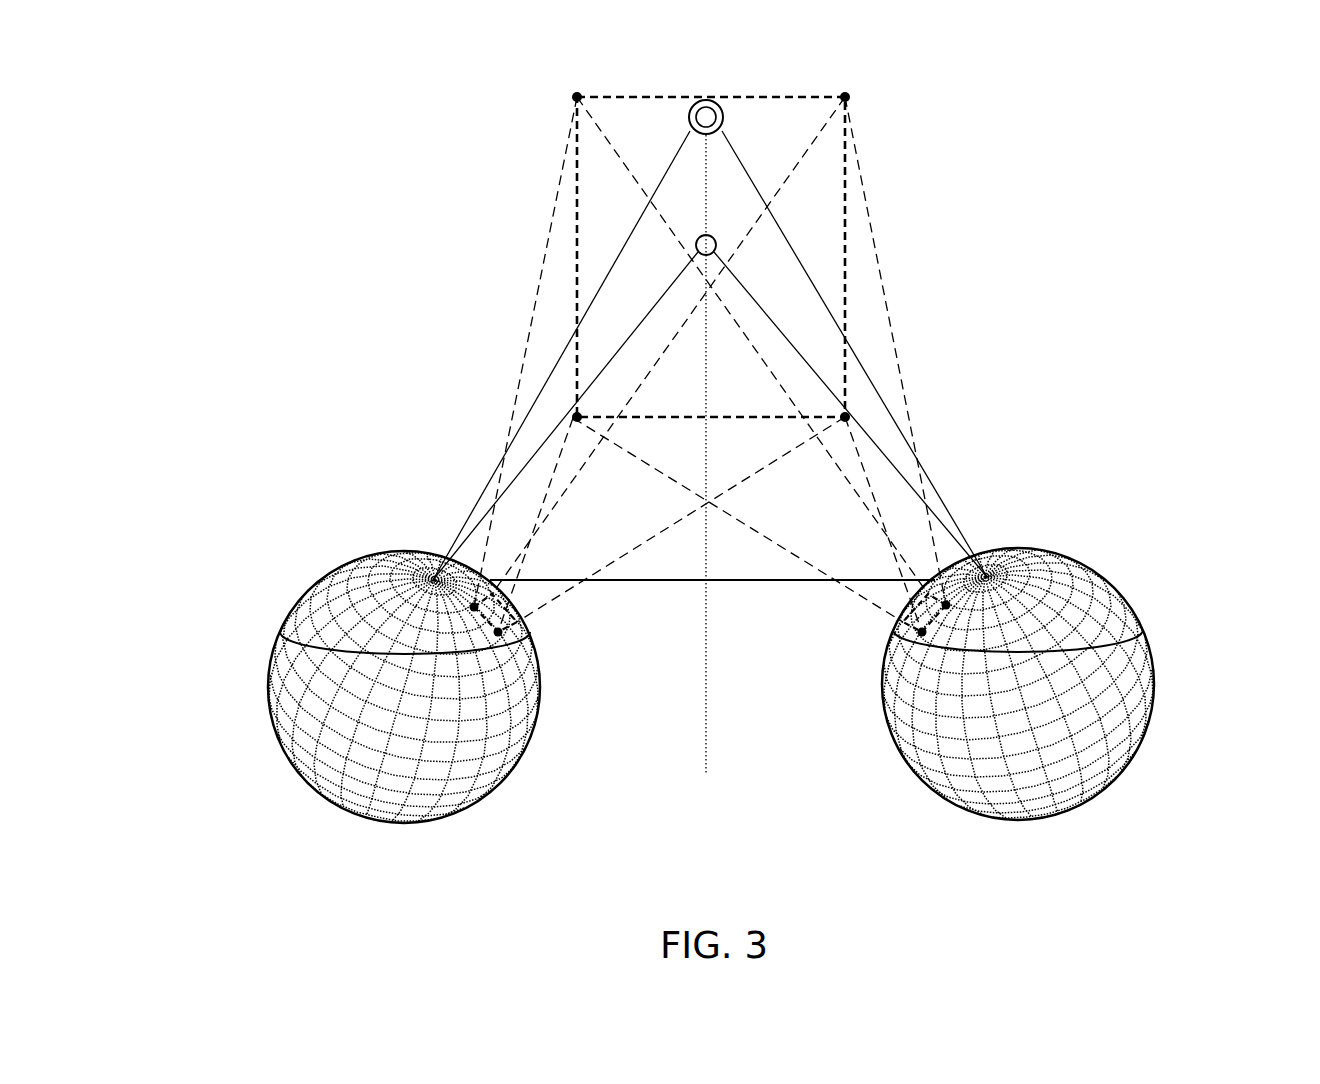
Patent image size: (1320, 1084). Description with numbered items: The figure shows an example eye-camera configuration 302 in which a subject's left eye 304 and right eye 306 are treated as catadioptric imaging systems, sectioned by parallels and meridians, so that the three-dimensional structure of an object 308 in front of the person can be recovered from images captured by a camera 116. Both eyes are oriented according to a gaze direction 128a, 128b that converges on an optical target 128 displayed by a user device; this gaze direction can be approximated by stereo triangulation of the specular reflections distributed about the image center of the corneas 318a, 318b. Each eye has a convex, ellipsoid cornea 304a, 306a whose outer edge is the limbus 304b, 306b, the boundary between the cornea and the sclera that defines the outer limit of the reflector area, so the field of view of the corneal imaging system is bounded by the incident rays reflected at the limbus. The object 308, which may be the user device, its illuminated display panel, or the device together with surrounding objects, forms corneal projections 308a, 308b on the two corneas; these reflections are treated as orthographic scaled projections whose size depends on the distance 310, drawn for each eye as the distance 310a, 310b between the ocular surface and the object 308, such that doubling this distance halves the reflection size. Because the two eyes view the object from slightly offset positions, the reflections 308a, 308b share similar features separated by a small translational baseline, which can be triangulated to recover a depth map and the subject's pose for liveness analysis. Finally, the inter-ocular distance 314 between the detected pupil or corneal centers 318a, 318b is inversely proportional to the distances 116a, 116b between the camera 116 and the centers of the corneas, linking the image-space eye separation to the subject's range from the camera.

The camera 116 is at (692, 119).
The distance between camera and center of left cornea 116a is at (492, 478).
The distance between camera and center of right cornea 116b is at (909, 446).
The optical target 128 is at (699, 249).
The gaze direction of left eye 128a is at (605, 368).
The gaze direction of right eye 128b is at (797, 352).
The eye-camera configuration 302 is at (1076, 201).
The left eye 304 is at (404, 687).
The cornea of left eye 304a is at (322, 610).
The limbus of left eye 304b is at (305, 636).
The right eye 306 is at (1018, 684).
The cornea of right eye 306a is at (1060, 602).
The limbus of right eye 306b is at (1107, 640).
The object 308 is at (781, 119).
The corneal projection of object on left eye 308a is at (508, 606).
The corneal projection of object on right eye 308b is at (921, 604).
The field of view 310 is at (949, 508).
The distance between left ocular surface and object 310a is at (552, 246).
The distance between right ocular surface and object 310b is at (884, 262).
The inter-ocular distance 314 is at (680, 584).
The center of left cornea 318a is at (430, 577).
The center of right cornea 318b is at (993, 578).